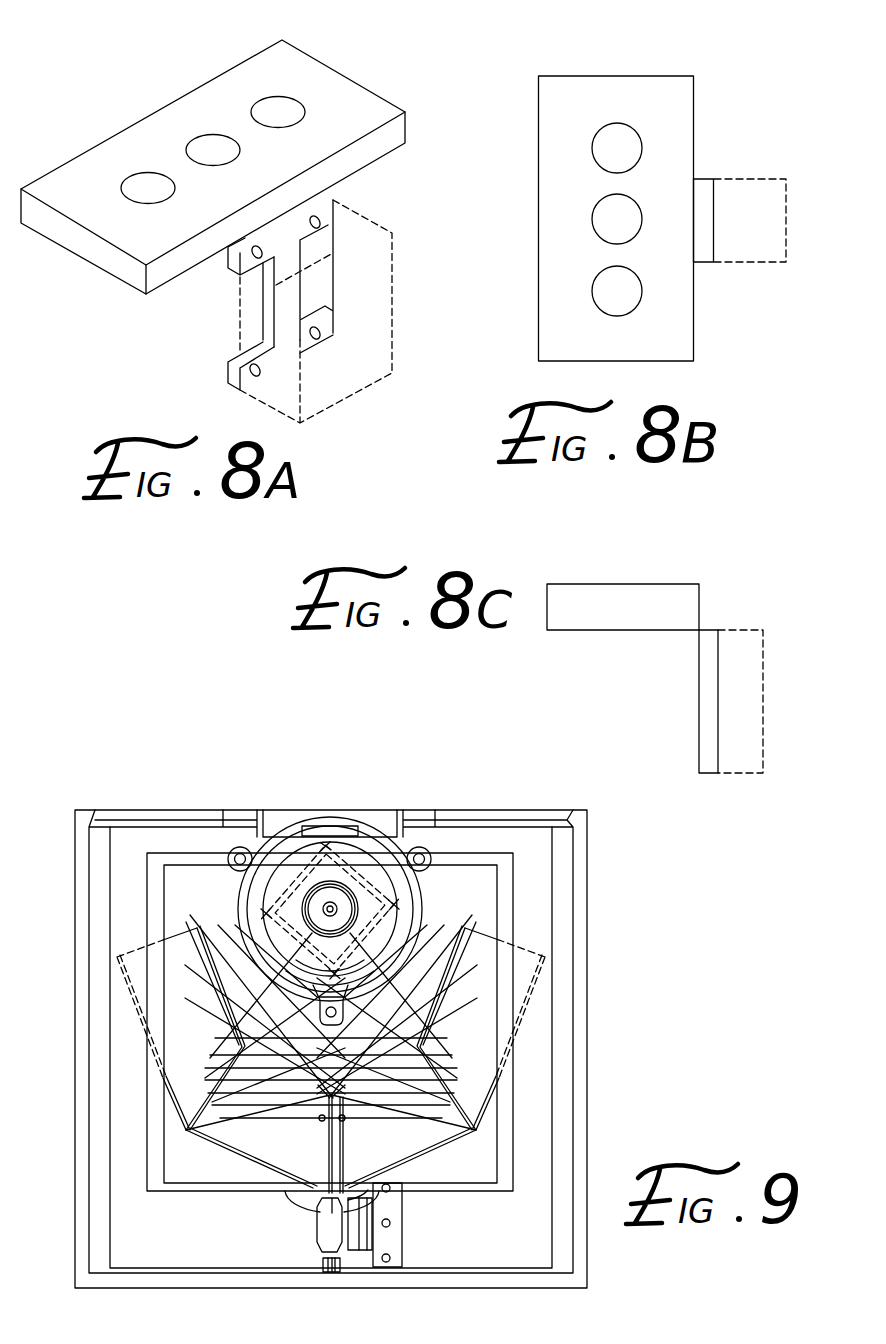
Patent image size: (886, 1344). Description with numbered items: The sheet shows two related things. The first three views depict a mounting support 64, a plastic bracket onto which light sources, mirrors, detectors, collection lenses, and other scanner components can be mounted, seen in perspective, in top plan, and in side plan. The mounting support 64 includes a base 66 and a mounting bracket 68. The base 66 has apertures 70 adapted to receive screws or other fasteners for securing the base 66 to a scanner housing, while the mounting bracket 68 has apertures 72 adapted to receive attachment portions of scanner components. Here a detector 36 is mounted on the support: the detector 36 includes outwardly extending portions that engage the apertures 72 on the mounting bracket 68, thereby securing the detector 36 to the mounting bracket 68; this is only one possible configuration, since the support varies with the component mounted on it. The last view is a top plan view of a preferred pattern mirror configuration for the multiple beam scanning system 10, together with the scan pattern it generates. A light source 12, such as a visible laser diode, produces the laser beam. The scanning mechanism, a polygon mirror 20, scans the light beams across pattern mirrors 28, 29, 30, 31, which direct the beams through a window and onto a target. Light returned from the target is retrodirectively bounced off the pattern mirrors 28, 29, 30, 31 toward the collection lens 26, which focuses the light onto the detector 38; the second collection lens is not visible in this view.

In FIG. 9, the multiple beam optical scanning system 10 is at (44, 820).
In FIG. 9, the light source 12 is at (317, 1245).
In FIG. 9, the polygon mirror 20 is at (411, 885).
In FIG. 9, the upper collection lens 26 is at (303, 1206).
In FIG. 9, the pattern mirror 28 is at (482, 1064).
In FIG. 9, the pattern mirror 29 is at (425, 1143).
In FIG. 9, the pattern mirror 30 is at (226, 1141).
In FIG. 9, the pattern mirror 31 is at (177, 1051).
In FIG. 8A, the detector 36 is at (371, 313).
In FIG. 8B, the detector 36 is at (766, 210).
In FIG. 8C, the detector 36 is at (742, 720).
In FIG. 9, the detector 38 is at (332, 1272).
In FIG. 8A, the mounting support 64 is at (94, 93).
In FIG. 8B, the mounting support 64 is at (560, 45).
In FIG. 8C, the mounting support 64 is at (578, 551).
In FIG. 8A, the base 66 is at (347, 100).
In FIG. 8B, the base 66 is at (640, 94).
In FIG. 8C, the base 66 is at (658, 602).
In FIG. 8A, the mounting bracket 68 is at (323, 295).
In FIG. 8B, the mounting bracket 68 is at (702, 189).
In FIG. 8C, the mounting bracket 68 is at (710, 693).
In FIG. 8A, the apertures 70 is at (148, 182).
In FIG. 8B, the apertures 70 is at (590, 143).
In FIG. 8A, the apertures 72 is at (257, 262).